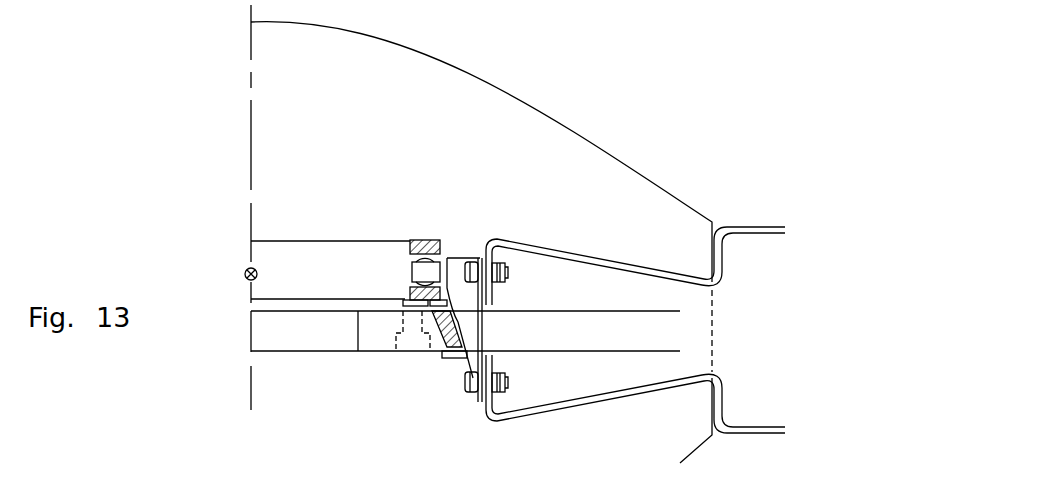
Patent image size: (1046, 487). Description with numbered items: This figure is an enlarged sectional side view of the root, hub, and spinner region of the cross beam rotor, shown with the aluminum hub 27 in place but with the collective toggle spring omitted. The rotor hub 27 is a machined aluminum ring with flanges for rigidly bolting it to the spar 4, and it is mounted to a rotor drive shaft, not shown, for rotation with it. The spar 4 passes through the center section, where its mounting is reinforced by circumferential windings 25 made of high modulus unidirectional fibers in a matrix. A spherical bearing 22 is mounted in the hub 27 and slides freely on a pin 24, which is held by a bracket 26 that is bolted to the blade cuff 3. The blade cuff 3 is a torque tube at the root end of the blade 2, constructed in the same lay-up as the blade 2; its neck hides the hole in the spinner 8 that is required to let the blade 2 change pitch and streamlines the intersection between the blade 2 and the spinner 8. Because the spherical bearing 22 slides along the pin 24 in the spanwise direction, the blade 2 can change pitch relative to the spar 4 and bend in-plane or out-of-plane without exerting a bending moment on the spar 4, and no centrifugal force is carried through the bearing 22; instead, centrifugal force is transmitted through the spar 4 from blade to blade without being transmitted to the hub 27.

The blade 2 is at (755, 228).
The blade cuff 3 is at (592, 258).
The spar 4 is at (349, 352).
The spinner 8 is at (540, 113).
The spherical bearing 22 is at (405, 250).
The pin 24 is at (410, 277).
The circumferential windings 25 is at (448, 357).
The bracket 26 is at (462, 258).
The aluminum hub 27 is at (316, 241).